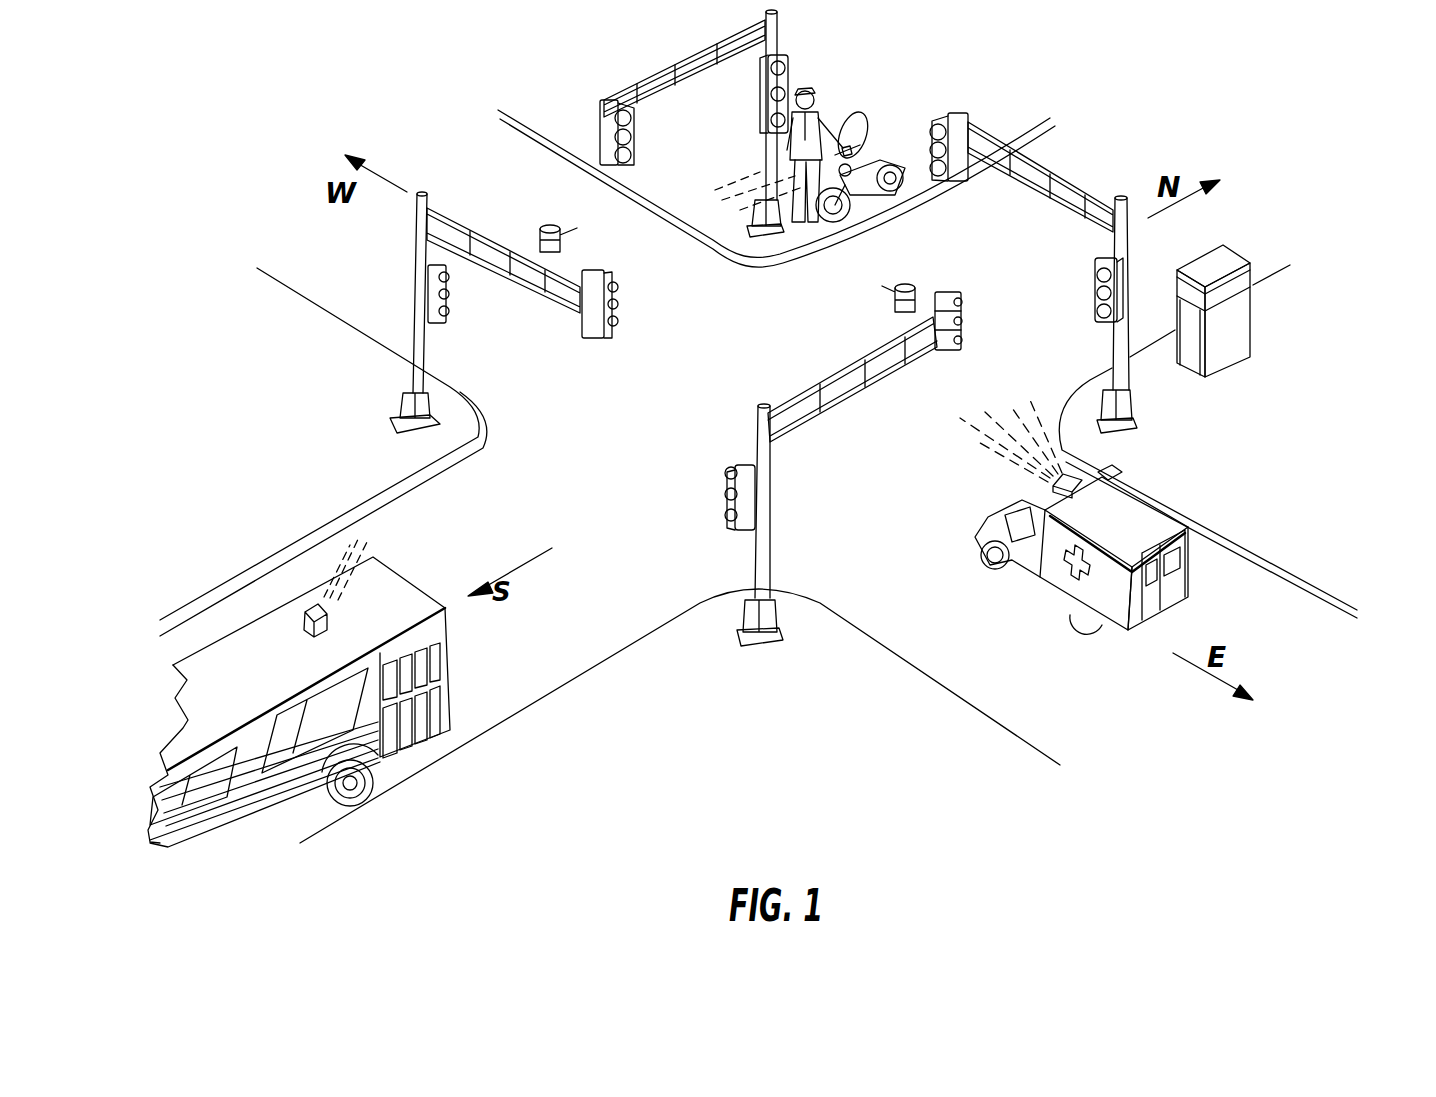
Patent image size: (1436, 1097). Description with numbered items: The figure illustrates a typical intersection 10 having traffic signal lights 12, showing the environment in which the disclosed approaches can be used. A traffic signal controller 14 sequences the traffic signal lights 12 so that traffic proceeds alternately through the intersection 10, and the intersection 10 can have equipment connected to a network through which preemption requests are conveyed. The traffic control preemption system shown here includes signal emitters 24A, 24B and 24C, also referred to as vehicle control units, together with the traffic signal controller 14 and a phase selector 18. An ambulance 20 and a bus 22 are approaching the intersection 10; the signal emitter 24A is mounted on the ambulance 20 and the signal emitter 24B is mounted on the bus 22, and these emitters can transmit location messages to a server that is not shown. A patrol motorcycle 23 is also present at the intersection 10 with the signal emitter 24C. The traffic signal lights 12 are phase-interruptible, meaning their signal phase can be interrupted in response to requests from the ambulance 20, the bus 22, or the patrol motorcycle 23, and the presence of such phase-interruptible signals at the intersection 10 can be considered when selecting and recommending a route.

The intersection 10 is at (1350, 530).
The traffic signal lights 12 is at (763, 107).
The traffic signal controller 14 is at (1235, 298).
The phase selector 18 is at (1230, 259).
The ambulance 20 is at (1074, 517).
The bus 22 is at (299, 677).
The patrol motorcycle 23 is at (860, 141).
The signal emitter 24A is at (1097, 470).
The signal emitter 24B is at (308, 607).
The signal emitter 24C is at (820, 110).